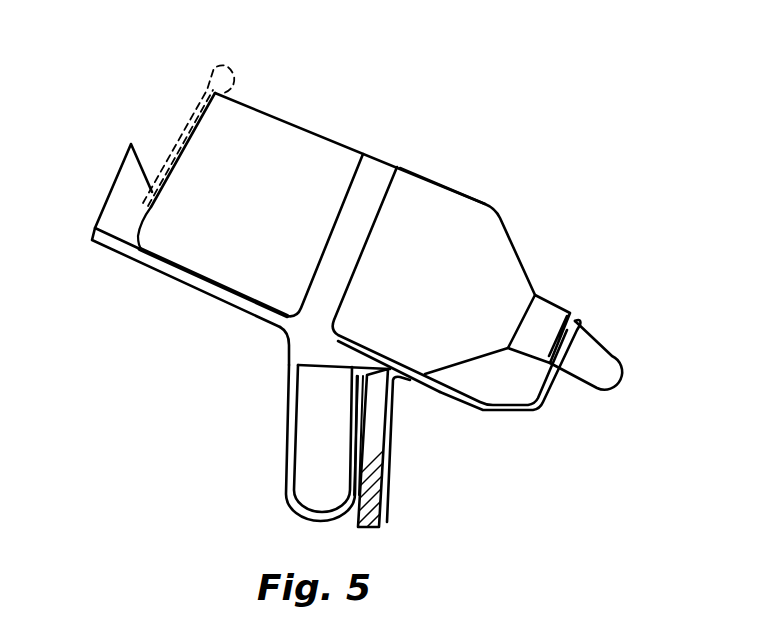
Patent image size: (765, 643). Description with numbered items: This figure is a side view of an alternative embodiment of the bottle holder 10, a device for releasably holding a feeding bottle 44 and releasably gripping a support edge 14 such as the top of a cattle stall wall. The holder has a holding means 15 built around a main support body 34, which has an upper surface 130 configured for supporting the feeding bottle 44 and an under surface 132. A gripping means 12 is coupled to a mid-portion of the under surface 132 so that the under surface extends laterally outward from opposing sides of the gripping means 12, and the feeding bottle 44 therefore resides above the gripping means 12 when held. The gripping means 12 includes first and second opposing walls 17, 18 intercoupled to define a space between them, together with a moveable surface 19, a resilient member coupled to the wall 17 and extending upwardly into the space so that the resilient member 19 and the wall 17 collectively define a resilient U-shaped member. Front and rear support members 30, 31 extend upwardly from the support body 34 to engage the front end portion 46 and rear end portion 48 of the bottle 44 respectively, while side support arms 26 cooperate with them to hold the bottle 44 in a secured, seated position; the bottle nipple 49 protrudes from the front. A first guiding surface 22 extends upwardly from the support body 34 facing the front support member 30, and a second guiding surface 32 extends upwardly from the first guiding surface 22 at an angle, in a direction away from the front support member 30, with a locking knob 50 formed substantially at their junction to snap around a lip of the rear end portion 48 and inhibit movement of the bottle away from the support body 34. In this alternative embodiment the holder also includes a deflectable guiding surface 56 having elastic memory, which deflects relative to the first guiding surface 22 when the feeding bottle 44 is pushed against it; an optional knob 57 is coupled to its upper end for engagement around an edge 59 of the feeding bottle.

The bottle holder 10 is at (447, 105).
The gripping means 12 is at (423, 487).
The support edge 14 is at (368, 530).
The holding means 15 is at (390, 125).
The first wall 17 is at (288, 428).
The second wall 18 is at (395, 428).
The moveable surface 19 is at (348, 478).
The first guiding surface 22 is at (140, 251).
The side support arms 26 is at (362, 240).
The front support member 30 is at (552, 387).
The rear support member 31 is at (118, 237).
The second guiding surface 32 is at (147, 155).
The main support body 34 is at (212, 288).
The feeding bottle 44 is at (437, 183).
The front end portion 46 is at (572, 287).
The rear end portion 48 is at (248, 92).
The bottle nipple 49 is at (605, 349).
The locking knob 50 is at (150, 213).
The deflectable guiding surface 56 is at (182, 118).
The knob 57 is at (217, 68).
The edge 59 is at (216, 95).
The upper surface 130 is at (460, 395).
The under surface 132 is at (452, 402).